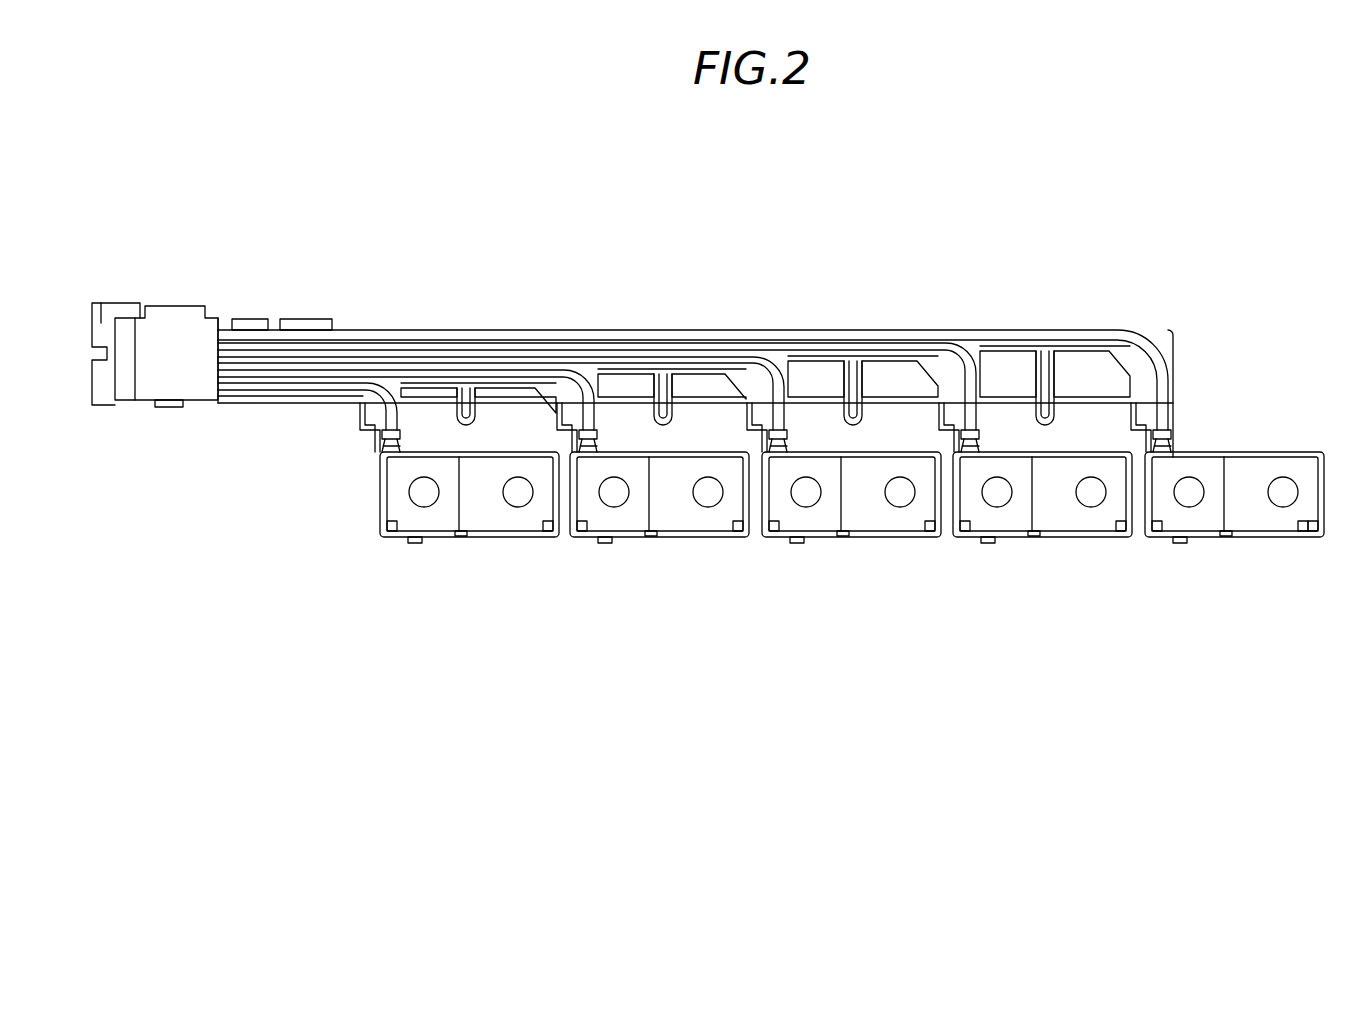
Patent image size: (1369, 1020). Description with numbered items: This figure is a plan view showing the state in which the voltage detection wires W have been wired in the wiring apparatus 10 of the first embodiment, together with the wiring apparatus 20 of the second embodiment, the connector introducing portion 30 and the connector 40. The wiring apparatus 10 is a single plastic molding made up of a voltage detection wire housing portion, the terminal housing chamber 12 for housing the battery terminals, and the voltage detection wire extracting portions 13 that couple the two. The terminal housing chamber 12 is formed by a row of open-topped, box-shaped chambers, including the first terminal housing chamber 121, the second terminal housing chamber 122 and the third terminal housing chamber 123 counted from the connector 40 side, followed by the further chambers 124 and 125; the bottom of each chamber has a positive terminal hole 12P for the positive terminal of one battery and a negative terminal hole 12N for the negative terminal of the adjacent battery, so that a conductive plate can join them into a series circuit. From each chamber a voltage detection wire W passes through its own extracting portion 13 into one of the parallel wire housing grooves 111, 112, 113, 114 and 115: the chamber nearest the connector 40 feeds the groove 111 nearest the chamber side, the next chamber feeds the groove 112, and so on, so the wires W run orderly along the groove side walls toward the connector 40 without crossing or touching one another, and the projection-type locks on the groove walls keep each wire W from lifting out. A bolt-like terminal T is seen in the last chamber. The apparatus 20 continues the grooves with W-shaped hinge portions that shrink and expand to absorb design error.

The wiring apparatus 10 is at (1165, 255).
The wiring apparatus 20 is at (367, 255).
The connector introducing portion 30 is at (161, 323).
The connector 40 is at (101, 323).
The terminal housing chamber 12 is at (844, 585).
The first terminal housing chamber 121 is at (450, 538).
The second terminal housing chamber 122 is at (653, 530).
The third terminal housing chamber 123 is at (856, 513).
The fourth battery cell 124 is at (1040, 510).
The fifth battery cell 125 is at (1235, 505).
The positive terminal hole 12P is at (418, 502).
The negative terminal hole 12N is at (515, 503).
The voltage detection wire extracting portion 13 is at (365, 445).
The wire housing groove 111 is at (227, 395).
The wire housing groove 112 is at (268, 380).
The wire housing groove 113 is at (318, 368).
The wire housing groove 114 is at (368, 352).
The wire housing groove 115 is at (375, 348).
The voltage detection wire W is at (1175, 343).
The terminal T is at (1300, 472).